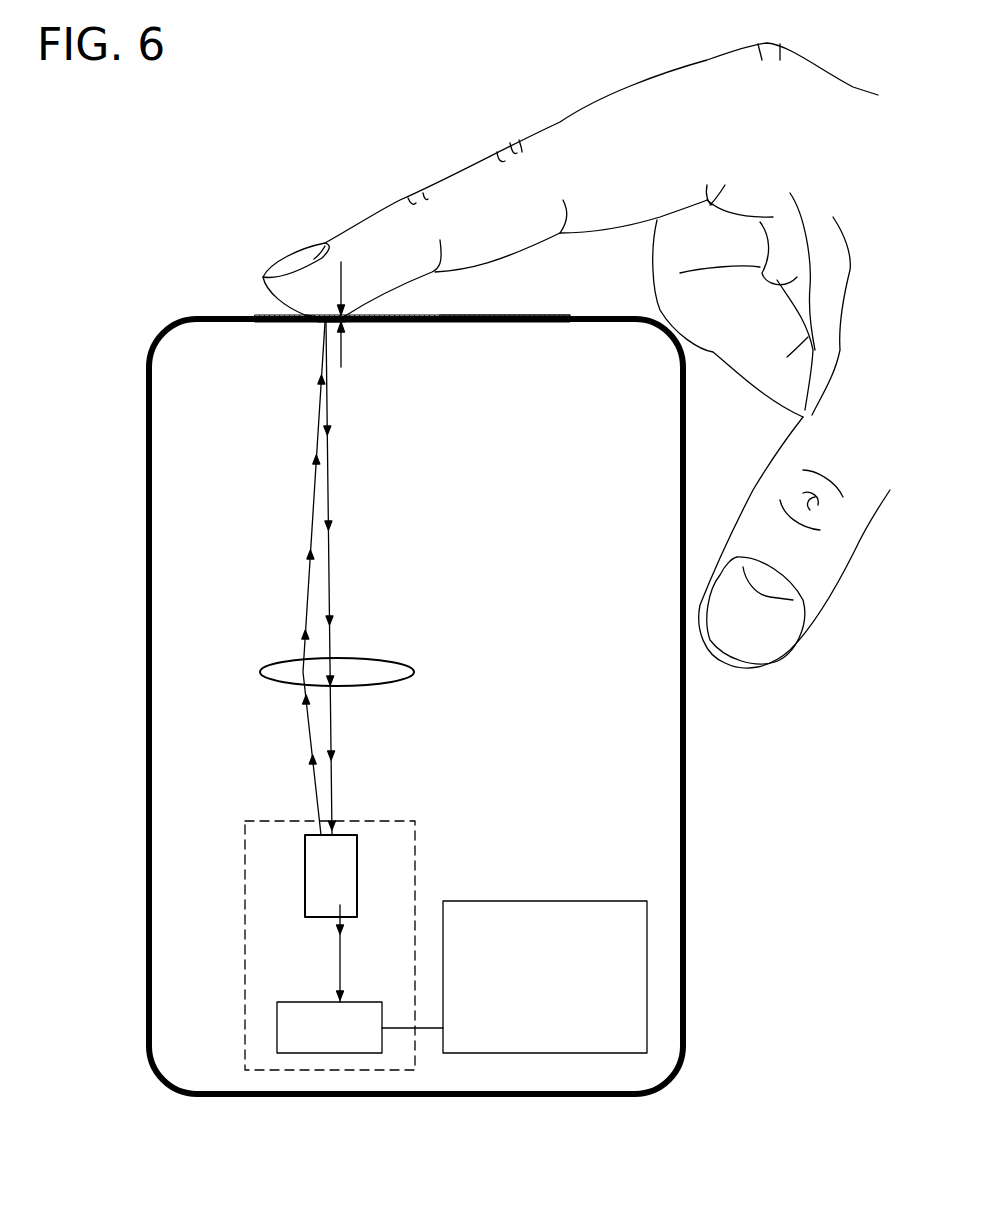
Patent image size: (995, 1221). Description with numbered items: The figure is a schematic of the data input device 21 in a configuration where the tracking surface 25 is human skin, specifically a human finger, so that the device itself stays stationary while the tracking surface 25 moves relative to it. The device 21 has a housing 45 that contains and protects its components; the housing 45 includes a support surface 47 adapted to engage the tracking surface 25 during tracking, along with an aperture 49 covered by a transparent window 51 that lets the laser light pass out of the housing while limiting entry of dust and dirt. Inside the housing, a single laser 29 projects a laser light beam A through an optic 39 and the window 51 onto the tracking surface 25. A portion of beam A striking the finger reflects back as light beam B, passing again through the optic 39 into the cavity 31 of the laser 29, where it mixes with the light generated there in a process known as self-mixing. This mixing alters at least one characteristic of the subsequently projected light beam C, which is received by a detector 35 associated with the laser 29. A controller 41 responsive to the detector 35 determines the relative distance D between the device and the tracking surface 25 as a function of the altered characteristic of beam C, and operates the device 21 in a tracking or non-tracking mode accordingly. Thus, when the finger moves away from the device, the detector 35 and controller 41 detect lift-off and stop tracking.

The data input device 21 is at (110, 830).
The tracking surface 25 is at (373, 322).
The laser 29 is at (305, 870).
The cavity 31 is at (331, 876).
The detector 35 is at (360, 1027).
The optic 39 is at (392, 662).
The controller 41 is at (545, 977).
The housing 45 is at (683, 782).
The support surface 47 is at (218, 316).
The aperture 49 is at (255, 322).
The transparent window 51 is at (475, 322).
The laser light beam A is at (303, 605).
The reflected light beam B is at (332, 595).
The projected light beam C is at (340, 965).
The relative distance D is at (351, 314).